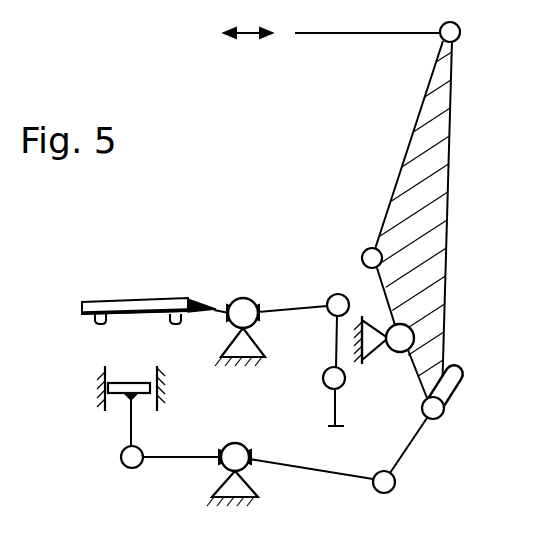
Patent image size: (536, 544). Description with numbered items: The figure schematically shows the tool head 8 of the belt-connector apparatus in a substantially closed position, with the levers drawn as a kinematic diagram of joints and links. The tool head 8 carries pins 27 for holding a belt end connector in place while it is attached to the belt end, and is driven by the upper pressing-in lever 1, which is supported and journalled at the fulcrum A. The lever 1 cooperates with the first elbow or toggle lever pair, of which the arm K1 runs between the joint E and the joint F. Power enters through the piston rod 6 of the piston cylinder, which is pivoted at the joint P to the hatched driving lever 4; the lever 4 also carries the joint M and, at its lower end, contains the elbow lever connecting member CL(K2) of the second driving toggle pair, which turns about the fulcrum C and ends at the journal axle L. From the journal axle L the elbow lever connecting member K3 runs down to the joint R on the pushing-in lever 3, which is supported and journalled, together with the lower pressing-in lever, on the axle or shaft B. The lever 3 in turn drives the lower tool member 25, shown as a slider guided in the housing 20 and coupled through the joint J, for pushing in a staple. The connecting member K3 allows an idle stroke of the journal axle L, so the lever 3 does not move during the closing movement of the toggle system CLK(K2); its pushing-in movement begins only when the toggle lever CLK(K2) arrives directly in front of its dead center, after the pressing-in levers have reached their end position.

The piston rod 6 is at (354, 31).
The driving lever 4 is at (441, 208).
The tool head 8 is at (132, 300).
The upper pressing-in lever 1 is at (216, 309).
The pins 27 is at (98, 325).
The housing 20 is at (100, 384).
The lower tool member 25 is at (131, 383).
The pushing-in lever 3 is at (173, 459).
The pivot joint P is at (461, 30).
The pivot joint M is at (362, 259).
The fulcrum of the elbow lever connecting member C is at (400, 352).
The journal axle L is at (447, 415).
The elbow lever arm K2 is at (417, 384).
The elbow lever connecting member K3 is at (406, 457).
The joint of toggle lever CLR R is at (392, 488).
The pivot of first toggle lever pair E is at (333, 315).
The toggle lever arm K1 is at (340, 365).
The pivot of first toggle lever pair F is at (323, 378).
The fulcrum A is at (240, 300).
The joint J is at (120, 457).
The axle or shaft B is at (230, 446).